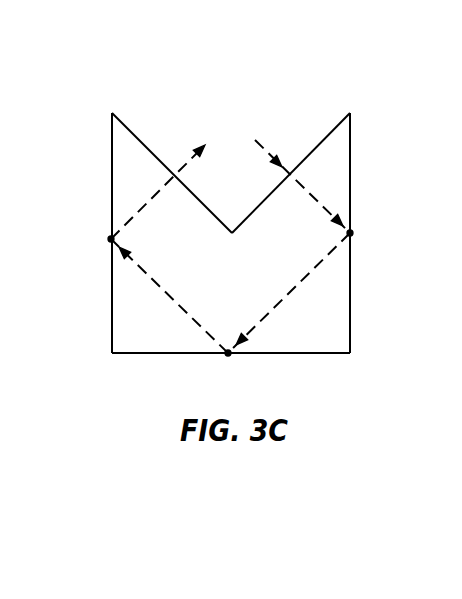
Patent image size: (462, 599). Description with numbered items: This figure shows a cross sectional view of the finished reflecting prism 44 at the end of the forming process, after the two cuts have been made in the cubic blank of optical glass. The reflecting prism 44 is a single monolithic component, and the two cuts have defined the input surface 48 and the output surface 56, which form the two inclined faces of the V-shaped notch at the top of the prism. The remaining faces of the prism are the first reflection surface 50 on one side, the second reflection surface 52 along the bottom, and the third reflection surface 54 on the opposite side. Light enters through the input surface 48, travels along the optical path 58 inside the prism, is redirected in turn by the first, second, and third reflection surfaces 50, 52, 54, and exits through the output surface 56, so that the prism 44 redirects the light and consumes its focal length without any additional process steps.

The reflecting prism 44 is at (300, 69).
The input surface 48 is at (257, 208).
The first reflection surface 50 is at (350, 300).
The second reflection surface 52 is at (317, 353).
The third reflection surface 54 is at (111, 180).
The output surface 56 is at (139, 140).
The optical path 58 is at (193, 142).